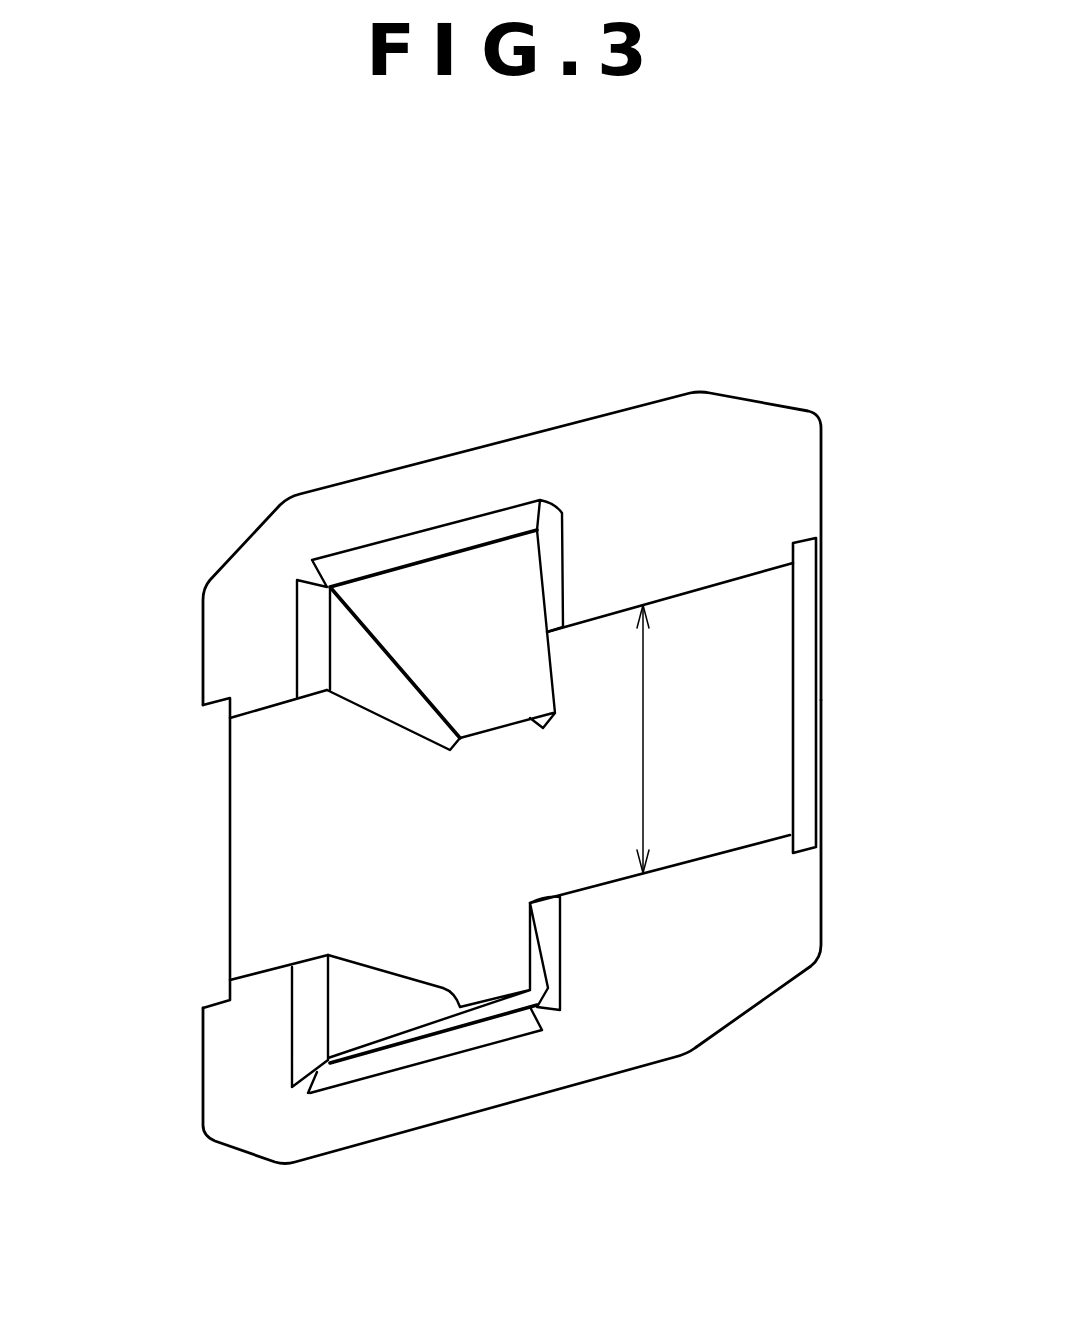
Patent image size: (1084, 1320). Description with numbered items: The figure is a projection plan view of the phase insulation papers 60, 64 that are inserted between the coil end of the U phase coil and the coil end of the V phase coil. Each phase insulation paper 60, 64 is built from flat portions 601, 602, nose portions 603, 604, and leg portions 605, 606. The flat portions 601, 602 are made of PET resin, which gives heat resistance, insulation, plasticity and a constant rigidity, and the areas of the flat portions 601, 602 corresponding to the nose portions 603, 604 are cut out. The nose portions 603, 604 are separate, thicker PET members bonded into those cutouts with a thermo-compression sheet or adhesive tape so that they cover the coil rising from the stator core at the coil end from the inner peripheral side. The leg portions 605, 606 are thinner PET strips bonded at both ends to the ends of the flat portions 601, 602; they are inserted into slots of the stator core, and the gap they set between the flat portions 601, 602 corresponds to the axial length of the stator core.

The phase insulation paper 60 is at (496, 766).
The phase insulation paper 64 is at (248, 352).
The flat portion 601 is at (740, 488).
The flat portion 602 is at (770, 903).
The nose portion 603 is at (450, 593).
The nose portion 604 is at (380, 1013).
The leg portion 605 is at (803, 682).
The leg portion 606 is at (212, 868).